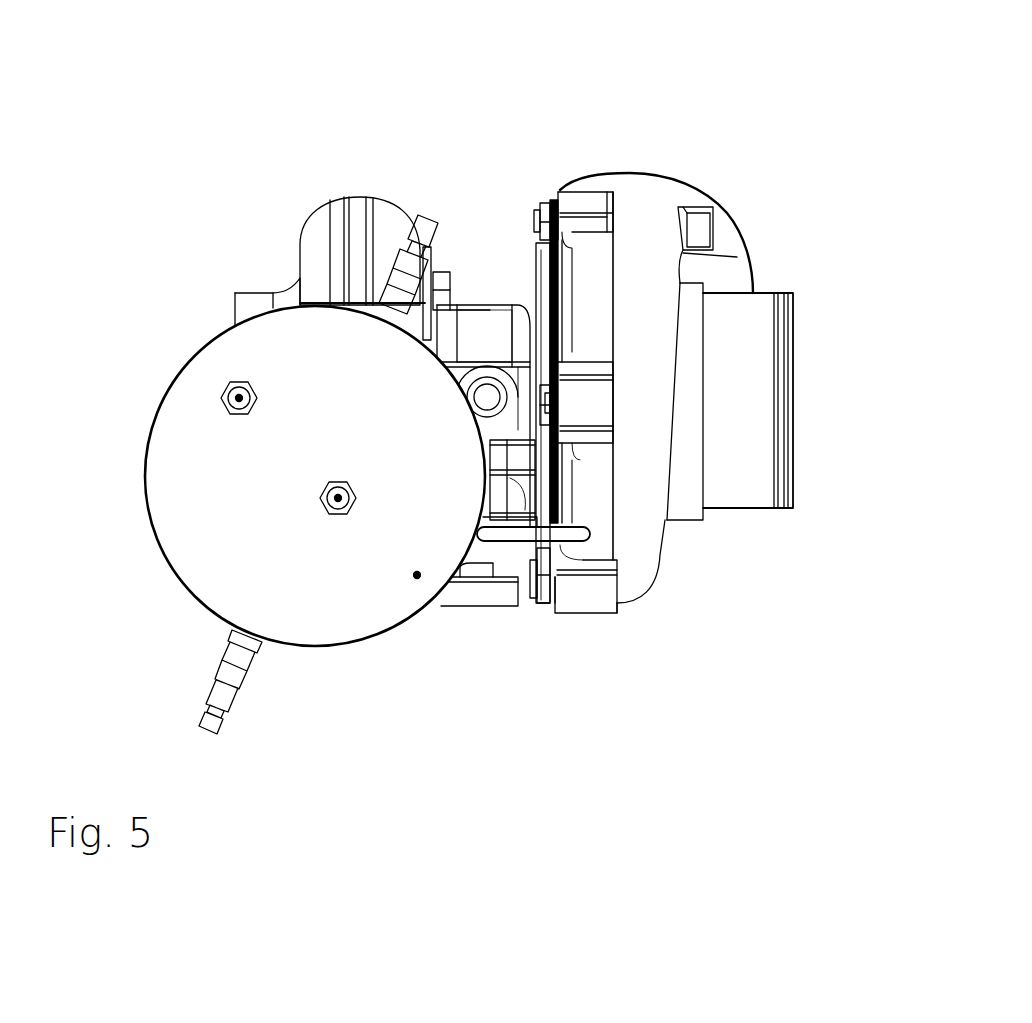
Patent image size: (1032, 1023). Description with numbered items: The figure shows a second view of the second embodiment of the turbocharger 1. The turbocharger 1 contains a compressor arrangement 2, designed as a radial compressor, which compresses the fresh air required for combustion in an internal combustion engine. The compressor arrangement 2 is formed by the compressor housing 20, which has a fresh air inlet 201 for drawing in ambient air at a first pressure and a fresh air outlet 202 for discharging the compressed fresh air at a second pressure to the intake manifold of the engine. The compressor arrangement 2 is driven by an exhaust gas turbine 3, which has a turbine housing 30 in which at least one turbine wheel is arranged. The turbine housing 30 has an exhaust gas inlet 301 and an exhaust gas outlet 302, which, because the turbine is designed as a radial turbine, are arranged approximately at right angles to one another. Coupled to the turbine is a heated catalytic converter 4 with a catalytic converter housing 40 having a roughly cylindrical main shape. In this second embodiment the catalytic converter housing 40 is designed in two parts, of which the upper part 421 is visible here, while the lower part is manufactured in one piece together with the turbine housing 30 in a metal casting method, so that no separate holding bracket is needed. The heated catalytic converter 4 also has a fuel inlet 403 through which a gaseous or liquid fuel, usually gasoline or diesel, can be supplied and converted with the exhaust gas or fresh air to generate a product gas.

The turbocharger 1 is at (549, 153).
The compressor arrangement 2 is at (772, 270).
The compressor housing 20 is at (665, 536).
The fresh air inlet 201 is at (723, 215).
The fresh air outlet 202 is at (797, 407).
The exhaust gas turbine 3 is at (294, 194).
The turbine housing 30 is at (310, 255).
The exhaust gas inlet 301 is at (472, 593).
The exhaust gas outlet 302 is at (235, 308).
The heated catalytic converter 4 is at (380, 648).
The catalytic converter housing 40 is at (148, 420).
The upper part 421 is at (185, 522).
The fuel inlet 403 is at (235, 697).